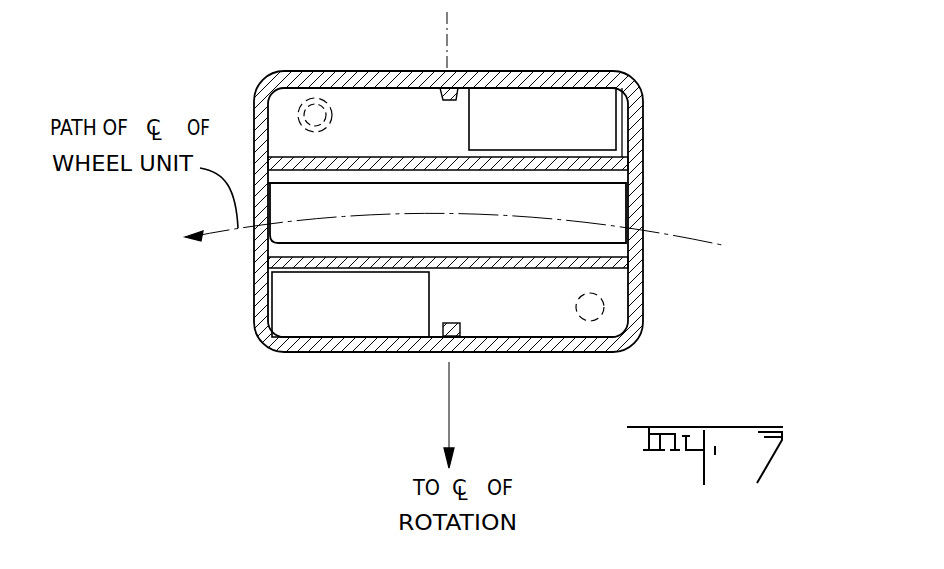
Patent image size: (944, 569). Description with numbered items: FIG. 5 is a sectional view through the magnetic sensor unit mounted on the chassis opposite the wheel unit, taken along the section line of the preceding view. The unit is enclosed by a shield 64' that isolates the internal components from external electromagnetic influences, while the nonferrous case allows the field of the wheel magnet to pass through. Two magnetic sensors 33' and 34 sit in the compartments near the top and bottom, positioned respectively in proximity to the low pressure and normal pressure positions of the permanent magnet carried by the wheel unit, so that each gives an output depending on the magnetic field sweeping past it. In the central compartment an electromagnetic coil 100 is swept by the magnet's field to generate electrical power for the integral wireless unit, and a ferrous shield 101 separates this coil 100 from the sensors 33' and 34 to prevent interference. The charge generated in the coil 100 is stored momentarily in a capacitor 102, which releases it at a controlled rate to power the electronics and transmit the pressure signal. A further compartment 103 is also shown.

The magnetic sensor 33' is at (410, 62).
The magnetic sensor 34 is at (450, 337).
The shield 64' is at (487, 211).
The electromagnetic coil 100 is at (613, 184).
The ferrous shield 101 is at (528, 266).
The capacitor 102 is at (617, 122).
The lower compartment 103 is at (337, 316).